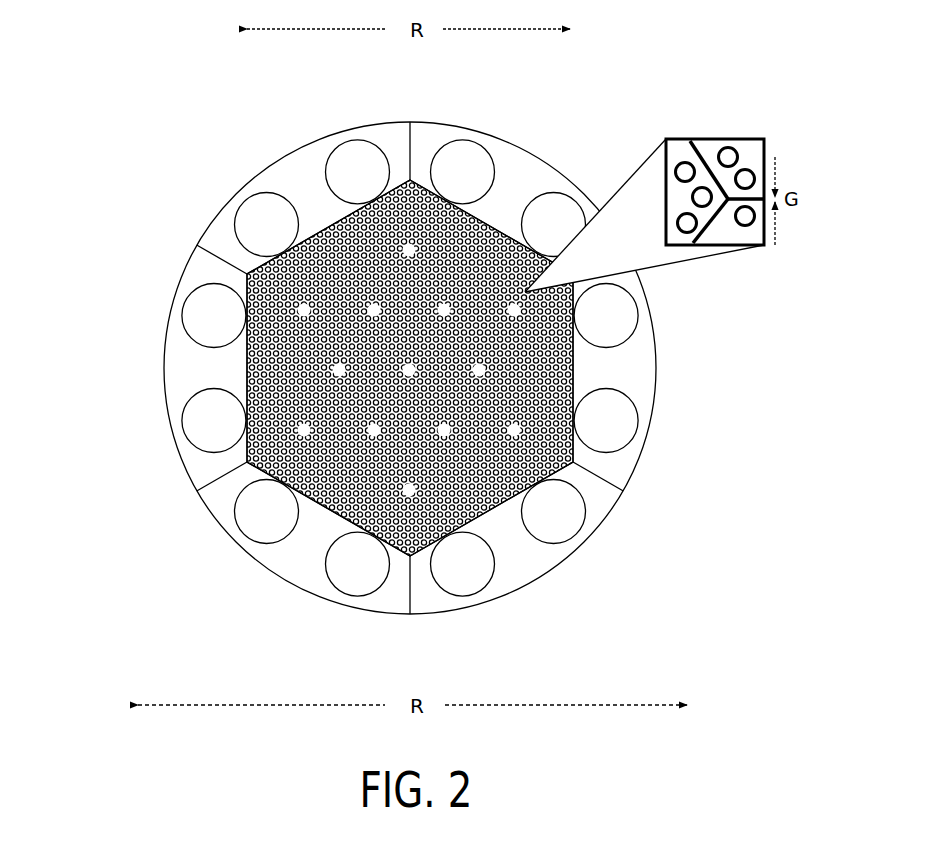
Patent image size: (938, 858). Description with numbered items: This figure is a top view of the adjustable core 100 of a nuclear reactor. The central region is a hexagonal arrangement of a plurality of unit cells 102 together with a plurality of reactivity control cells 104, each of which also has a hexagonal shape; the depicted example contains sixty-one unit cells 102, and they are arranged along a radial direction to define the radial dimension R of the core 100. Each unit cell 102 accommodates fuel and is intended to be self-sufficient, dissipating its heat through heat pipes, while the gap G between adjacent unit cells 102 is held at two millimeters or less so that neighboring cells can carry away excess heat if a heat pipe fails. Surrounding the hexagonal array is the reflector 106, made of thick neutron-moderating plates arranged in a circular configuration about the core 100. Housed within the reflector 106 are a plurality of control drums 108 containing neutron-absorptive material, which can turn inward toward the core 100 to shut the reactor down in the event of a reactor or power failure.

The core 100 is at (564, 134).
The unit cells 102 is at (342, 450).
The reactivity control cells 104 is at (448, 312).
The reflector 106 is at (308, 197).
The control drums 108 is at (203, 408).